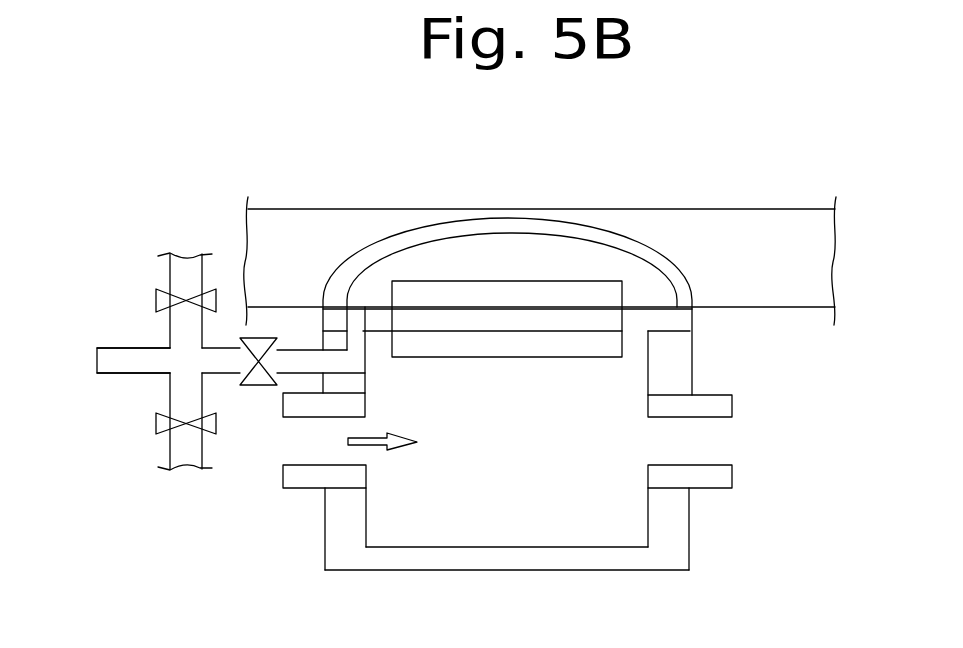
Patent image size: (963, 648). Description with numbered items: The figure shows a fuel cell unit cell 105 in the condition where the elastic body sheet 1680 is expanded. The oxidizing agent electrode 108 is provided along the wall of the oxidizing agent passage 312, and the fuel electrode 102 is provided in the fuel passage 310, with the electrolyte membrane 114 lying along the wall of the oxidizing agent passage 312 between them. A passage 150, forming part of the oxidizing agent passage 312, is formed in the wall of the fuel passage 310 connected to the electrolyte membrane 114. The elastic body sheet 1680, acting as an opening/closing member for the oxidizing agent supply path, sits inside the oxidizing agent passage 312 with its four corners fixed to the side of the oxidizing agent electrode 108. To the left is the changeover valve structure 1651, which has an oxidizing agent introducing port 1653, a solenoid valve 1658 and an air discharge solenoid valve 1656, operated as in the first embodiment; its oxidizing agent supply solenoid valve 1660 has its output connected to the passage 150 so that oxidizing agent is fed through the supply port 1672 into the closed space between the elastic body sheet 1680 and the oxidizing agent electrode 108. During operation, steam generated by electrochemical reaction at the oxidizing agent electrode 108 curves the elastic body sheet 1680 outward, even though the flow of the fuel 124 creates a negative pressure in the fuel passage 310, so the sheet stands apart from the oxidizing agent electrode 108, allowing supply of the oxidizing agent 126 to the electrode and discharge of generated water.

The fuel electrode 102 is at (608, 343).
The unit cell 105 is at (825, 572).
The oxidizing agent electrode 108 is at (515, 288).
The electrolyte membrane 114 is at (680, 319).
The fuel 124 is at (364, 443).
The oxidizing agent 126 is at (298, 272).
The passage 150 is at (355, 357).
The fuel passage 310 is at (302, 455).
The oxidizing agent passage 312 is at (372, 233).
The changeover valve structure 1651 is at (92, 335).
The oxidizing agent introducing port 1653 is at (95, 362).
The air discharge solenoid valve 1656 is at (158, 433).
The solenoid valve 1658 is at (155, 293).
The oxidizing agent supply solenoid valve 1660 is at (245, 385).
The supply port 1672 is at (364, 300).
The elastic body sheet 1680 is at (663, 258).